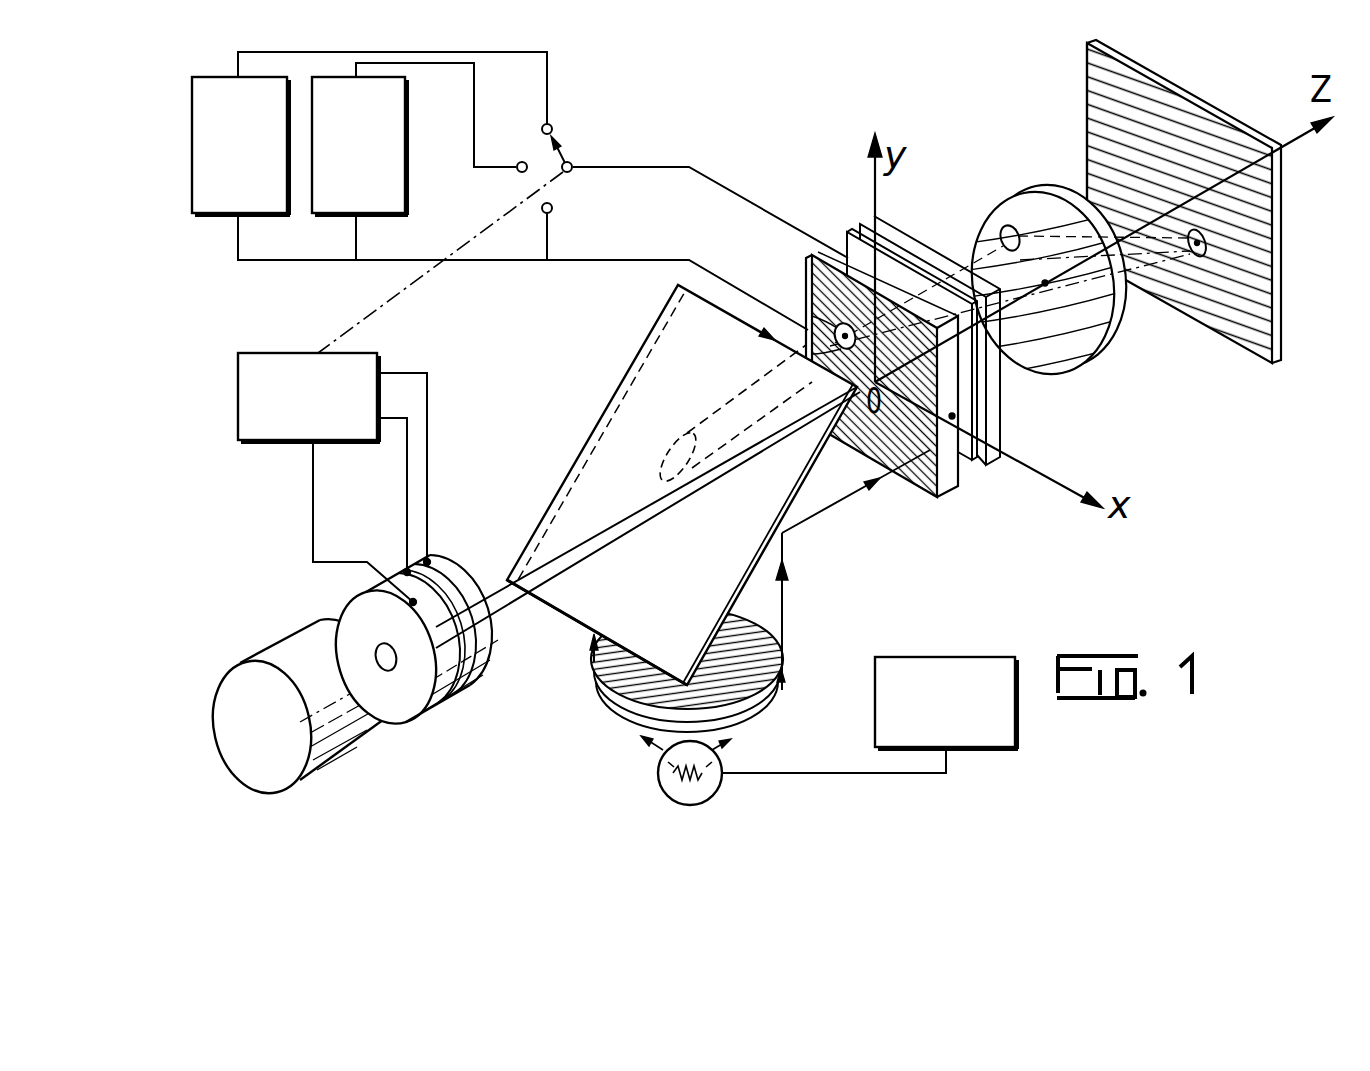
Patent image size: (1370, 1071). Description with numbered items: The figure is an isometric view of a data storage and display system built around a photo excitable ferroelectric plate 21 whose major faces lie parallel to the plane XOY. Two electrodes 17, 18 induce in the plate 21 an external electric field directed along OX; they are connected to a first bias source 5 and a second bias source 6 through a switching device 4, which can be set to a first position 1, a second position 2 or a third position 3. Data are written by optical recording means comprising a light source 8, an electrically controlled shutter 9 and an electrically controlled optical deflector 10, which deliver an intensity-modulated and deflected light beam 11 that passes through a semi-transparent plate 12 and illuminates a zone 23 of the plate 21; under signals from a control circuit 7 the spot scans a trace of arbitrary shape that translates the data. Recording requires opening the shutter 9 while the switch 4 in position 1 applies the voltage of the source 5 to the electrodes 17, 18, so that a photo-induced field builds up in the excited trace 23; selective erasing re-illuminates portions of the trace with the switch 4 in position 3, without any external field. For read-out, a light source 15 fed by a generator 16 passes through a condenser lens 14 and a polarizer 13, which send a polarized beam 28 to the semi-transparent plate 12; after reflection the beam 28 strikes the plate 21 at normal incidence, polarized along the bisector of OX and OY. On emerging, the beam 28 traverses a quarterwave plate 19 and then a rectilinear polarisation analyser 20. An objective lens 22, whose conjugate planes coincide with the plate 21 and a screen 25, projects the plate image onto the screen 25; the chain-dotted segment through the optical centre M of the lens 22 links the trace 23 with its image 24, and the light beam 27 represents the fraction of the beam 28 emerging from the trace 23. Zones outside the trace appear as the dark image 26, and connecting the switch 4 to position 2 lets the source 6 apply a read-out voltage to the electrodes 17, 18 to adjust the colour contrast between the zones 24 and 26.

The position of the switch 1 is at (557, 117).
The position of the switch 2 is at (522, 148).
The position of the switch 3 is at (555, 210).
The switching device 4 is at (575, 163).
The bias source 5 is at (214, 215).
The bias source 6 is at (334, 215).
The control circuit 7 is at (260, 443).
The light source 8 is at (258, 648).
The electrically controlled shutter 9 is at (360, 594).
The electrically controlled optical deflector 10 is at (490, 683).
The light beam 11 is at (502, 566).
The semi-transparent plate 12 is at (648, 348).
The polarizer 13 is at (758, 636).
The condenser lens 14 is at (775, 705).
The light source 15 is at (658, 774).
The generator 16 is at (907, 656).
The electrode 17 is at (806, 276).
The electrode 18 is at (946, 496).
The quarterwave plate 19 is at (977, 458).
The rectilinear polarisation analyser 20 is at (1002, 420).
The photo excitable ferroelectric plate 21 is at (922, 487).
The objective lens 22 is at (1080, 373).
The zone of the plate (trace) 23 is at (802, 357).
The image of the trace 24 is at (1197, 258).
The screen 25 is at (1287, 337).
The image (dark zone) 26 is at (1253, 340).
The light beam 27 is at (960, 253).
The polarized beam 28 is at (824, 512).